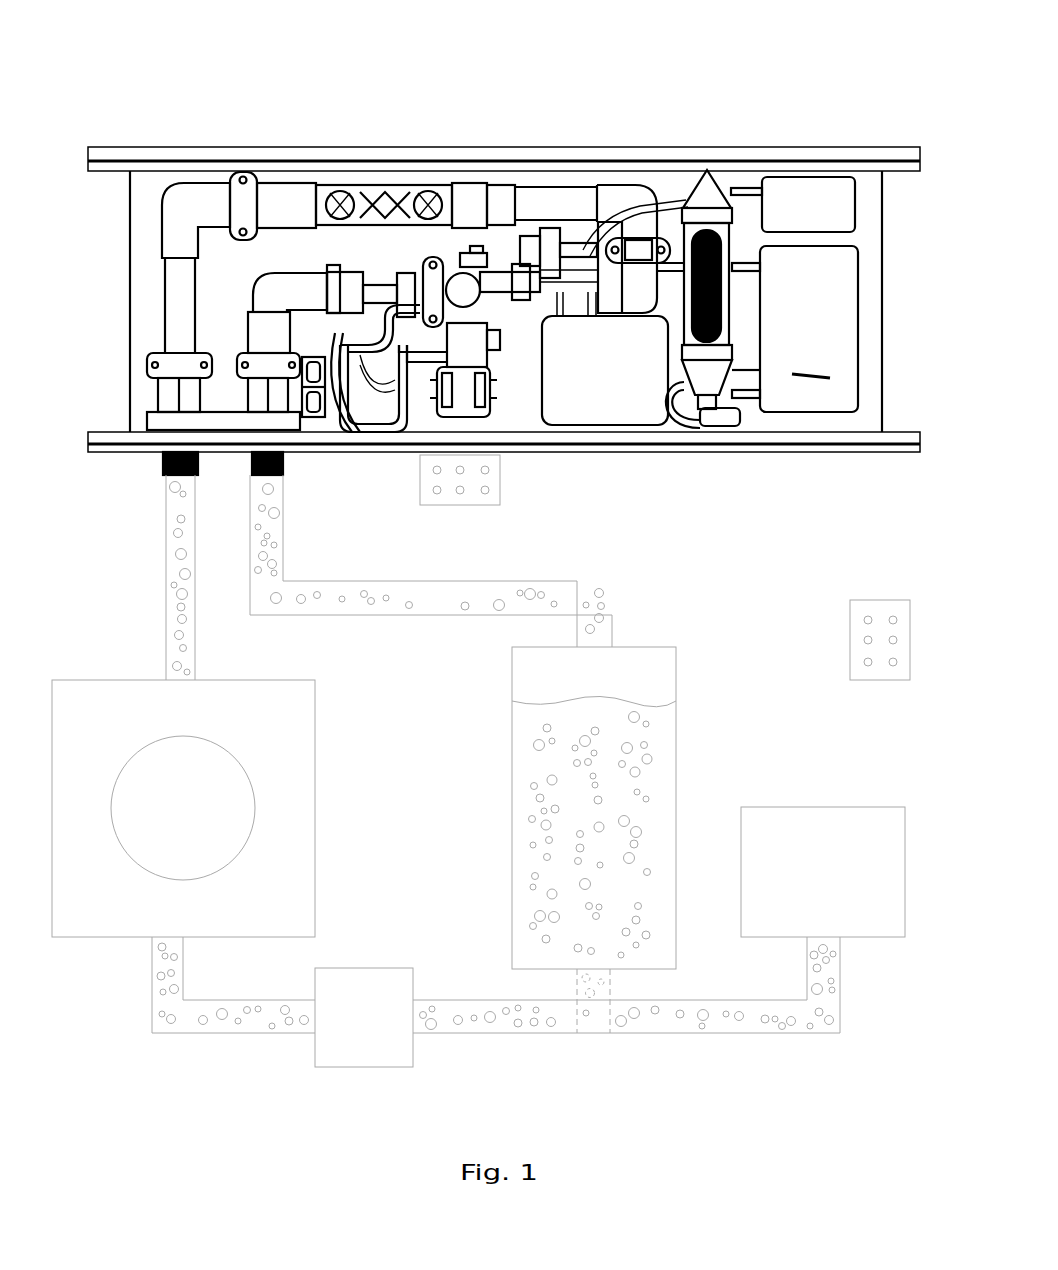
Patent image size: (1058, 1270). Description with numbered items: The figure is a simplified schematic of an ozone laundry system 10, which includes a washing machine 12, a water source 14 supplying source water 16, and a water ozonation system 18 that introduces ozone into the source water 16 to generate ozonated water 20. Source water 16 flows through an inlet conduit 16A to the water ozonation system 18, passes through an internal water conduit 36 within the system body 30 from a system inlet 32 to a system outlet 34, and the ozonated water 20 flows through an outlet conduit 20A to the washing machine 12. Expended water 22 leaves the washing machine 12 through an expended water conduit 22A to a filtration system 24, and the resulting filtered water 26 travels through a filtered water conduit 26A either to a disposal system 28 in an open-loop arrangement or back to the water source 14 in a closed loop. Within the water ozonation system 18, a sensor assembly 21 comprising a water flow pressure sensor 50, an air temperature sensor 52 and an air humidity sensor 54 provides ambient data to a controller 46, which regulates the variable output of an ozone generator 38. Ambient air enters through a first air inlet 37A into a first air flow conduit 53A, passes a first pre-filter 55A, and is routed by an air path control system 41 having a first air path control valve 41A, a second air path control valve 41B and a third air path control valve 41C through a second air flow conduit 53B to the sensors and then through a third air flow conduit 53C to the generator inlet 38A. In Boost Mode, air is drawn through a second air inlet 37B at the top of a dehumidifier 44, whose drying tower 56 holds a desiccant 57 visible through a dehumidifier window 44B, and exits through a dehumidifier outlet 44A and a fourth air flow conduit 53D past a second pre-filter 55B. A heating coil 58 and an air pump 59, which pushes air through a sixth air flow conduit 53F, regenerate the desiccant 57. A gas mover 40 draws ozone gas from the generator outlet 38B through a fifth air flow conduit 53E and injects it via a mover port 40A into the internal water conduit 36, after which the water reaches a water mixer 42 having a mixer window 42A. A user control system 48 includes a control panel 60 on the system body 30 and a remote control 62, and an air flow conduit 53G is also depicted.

The ozone laundry system 10 is at (126, 95).
The washing machine 12 is at (316, 835).
The water source 14 is at (677, 762).
The source water 16 is at (545, 764).
The inlet conduit 16A is at (430, 616).
The water ozonation system 18 is at (893, 457).
The ozonated water 20 is at (172, 545).
The outlet conduit 20A is at (167, 613).
The sensor assembly 21 is at (495, 430).
The expended water 22 is at (233, 1027).
The expended water conduit 22A is at (152, 1018).
The filtration system 24 is at (358, 968).
The filtered water 26 is at (468, 1003).
The filtered water conduit 26A is at (530, 1034).
The disposal system 28 is at (832, 807).
The system body 30 is at (128, 373).
The system inlet 32 is at (253, 467).
The system outlet 34 is at (163, 463).
The internal water conduit 36 is at (165, 282).
The first air inlet 37A is at (540, 395).
The second air inlet 37B is at (706, 185).
The ozone generator 38 is at (845, 314).
The generator inlet 38A is at (762, 394).
The generator outlet 38B is at (762, 266).
The gas mover 40 is at (455, 255).
The mover port 40A is at (480, 252).
The air path control system 41 is at (300, 410).
The first air path control valve 41A is at (310, 420).
The second air path control valve 41B is at (290, 363).
The third air path control valve 41C is at (262, 330).
The water mixer 42 is at (348, 183).
The mixer window 42A is at (412, 183).
The dehumidifier 44 is at (716, 192).
The dehumidifier outlet 44A is at (712, 426).
The dehumidifier window 44B is at (722, 240).
The controller 46 is at (650, 425).
The user control system 48 is at (428, 505).
The water flow pressure sensor 50 is at (345, 268).
The air temperature sensor 52 is at (440, 385).
The first air flow conduit 53A is at (343, 430).
The second air flow conduit 53B is at (388, 428).
The third air flow conduit 53C is at (680, 428).
The fourth air flow conduit 53D is at (742, 370).
The fifth air flow conduit 53E is at (628, 187).
The sixth air flow conduit 53F is at (660, 200).
The hose 53G is at (482, 430).
The air humidity sensor 54 is at (492, 398).
The first pre-filter 55A is at (500, 345).
The second pre-filter 55B is at (547, 230).
The drying tower 56 is at (688, 237).
The desiccant 57 is at (718, 305).
The heating coil 58 is at (740, 412).
The air pump 59 is at (822, 178).
The control panel 60 is at (462, 505).
The remote control 62 is at (876, 600).